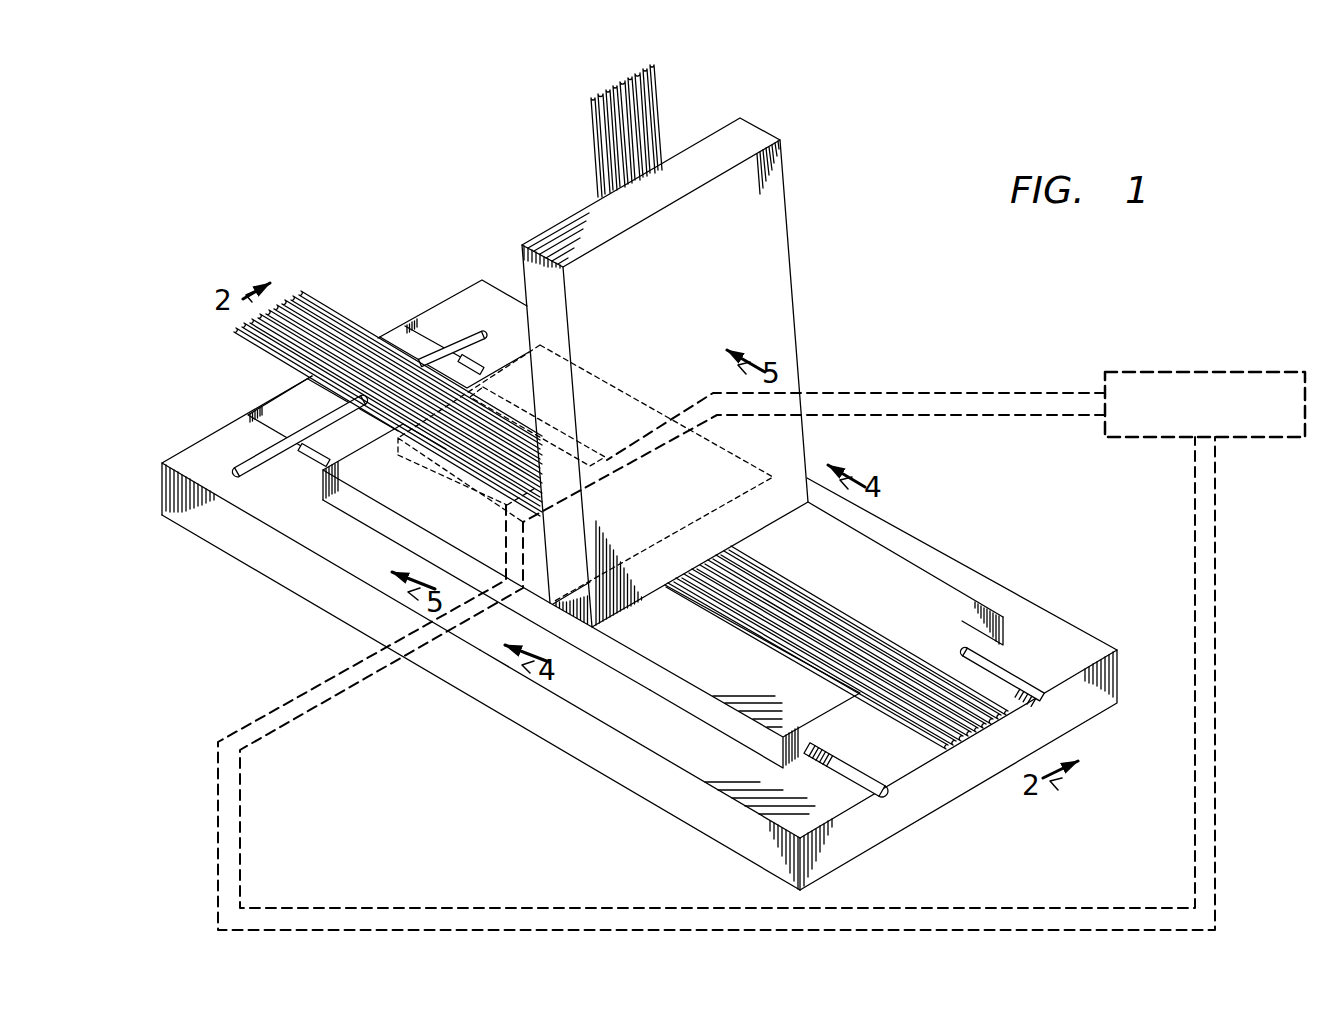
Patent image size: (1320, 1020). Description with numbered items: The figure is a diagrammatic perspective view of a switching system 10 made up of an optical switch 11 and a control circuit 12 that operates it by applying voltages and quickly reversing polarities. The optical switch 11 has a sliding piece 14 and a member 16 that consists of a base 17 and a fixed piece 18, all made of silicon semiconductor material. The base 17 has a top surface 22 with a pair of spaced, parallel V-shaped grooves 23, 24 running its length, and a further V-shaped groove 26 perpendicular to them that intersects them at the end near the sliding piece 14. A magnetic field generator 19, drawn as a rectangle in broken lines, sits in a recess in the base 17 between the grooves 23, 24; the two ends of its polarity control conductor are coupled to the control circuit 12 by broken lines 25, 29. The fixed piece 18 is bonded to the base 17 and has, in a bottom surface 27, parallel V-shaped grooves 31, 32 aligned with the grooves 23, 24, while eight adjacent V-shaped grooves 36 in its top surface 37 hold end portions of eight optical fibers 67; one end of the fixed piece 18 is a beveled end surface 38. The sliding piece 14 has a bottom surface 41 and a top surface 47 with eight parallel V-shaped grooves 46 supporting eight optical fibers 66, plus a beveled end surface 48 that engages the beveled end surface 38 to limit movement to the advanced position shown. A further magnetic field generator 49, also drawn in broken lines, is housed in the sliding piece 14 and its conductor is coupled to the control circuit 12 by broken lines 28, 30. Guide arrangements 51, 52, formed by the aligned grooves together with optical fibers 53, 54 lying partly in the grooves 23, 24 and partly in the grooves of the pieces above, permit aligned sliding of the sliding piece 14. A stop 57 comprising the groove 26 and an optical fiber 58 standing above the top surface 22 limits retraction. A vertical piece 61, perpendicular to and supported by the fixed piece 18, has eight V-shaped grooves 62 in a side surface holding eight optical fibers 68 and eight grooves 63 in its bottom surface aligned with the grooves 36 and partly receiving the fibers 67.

The switching system 10 is at (410, 153).
The optical switch 11 is at (297, 630).
The control circuit 12 is at (1284, 372).
The sliding piece 14 is at (336, 564).
The member 16 is at (645, 811).
The base 17 is at (561, 751).
The fixed piece 18 is at (930, 572).
The magnetic field generator 19 is at (477, 498).
The top surface 22 is at (1003, 592).
The V-shaped groove 23 is at (246, 417).
The V-shaped groove 24 is at (403, 325).
The broken line 25 is at (243, 828).
The V-shaped groove 26 is at (236, 470).
The bottom surface 27 is at (703, 727).
The broken line 28 is at (217, 850).
The broken line 29 is at (1023, 417).
The broken line 30 is at (1002, 393).
The V-shaped groove 31 is at (810, 745).
The V-shaped groove 32 is at (968, 655).
The V-shaped grooves 36 is at (736, 614).
The top surface 37 is at (888, 560).
The beveled end surface 38 is at (583, 650).
The bottom surface 41 is at (340, 516).
The V-shaped grooves 46 is at (418, 458).
The top surface 47 is at (403, 512).
The beveled end surface 48 is at (566, 633).
The magnetic field generator 49 is at (583, 448).
The guide arrangement 51 is at (868, 768).
The guide arrangement 52 is at (1014, 667).
The optical fiber 53 is at (322, 455).
The optical fiber 54 is at (483, 362).
The stop 57 is at (242, 454).
The optical fiber 58 is at (263, 460).
The vertical piece 61 is at (798, 296).
The V-shaped grooves 62 is at (668, 162).
The V-shaped grooves 63 is at (737, 546).
The optical fibers 66 is at (320, 305).
The optical fibers 67 is at (930, 748).
The optical fibers 68 is at (660, 93).